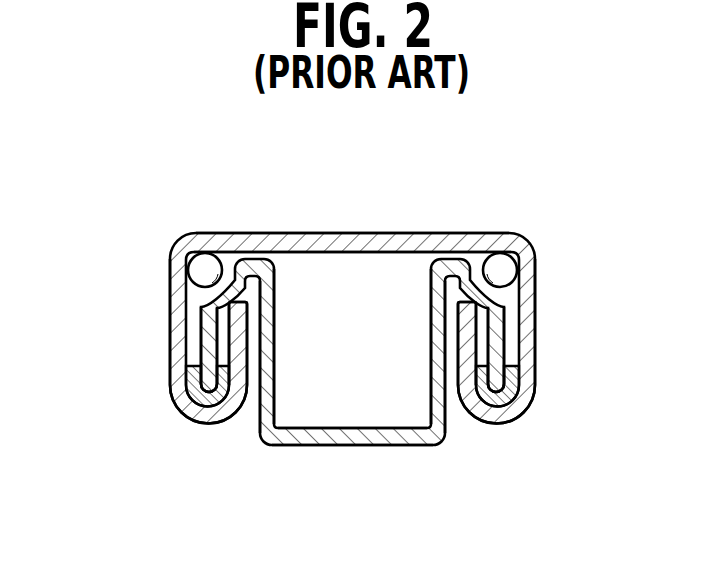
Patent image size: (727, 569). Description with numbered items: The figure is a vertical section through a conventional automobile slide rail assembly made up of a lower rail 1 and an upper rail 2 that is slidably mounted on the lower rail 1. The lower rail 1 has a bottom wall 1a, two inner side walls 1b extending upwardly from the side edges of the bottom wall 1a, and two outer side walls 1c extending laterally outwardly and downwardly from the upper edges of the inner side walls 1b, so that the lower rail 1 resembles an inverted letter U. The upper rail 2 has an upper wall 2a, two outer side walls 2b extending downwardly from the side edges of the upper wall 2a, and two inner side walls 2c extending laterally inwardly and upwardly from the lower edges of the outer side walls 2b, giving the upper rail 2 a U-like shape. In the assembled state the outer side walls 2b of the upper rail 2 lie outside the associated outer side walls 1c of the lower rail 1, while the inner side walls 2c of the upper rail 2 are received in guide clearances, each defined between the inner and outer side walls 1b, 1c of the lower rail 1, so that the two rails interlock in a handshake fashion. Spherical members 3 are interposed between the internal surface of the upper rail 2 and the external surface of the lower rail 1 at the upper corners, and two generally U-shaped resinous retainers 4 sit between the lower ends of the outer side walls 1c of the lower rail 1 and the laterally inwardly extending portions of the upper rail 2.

The lower rail 1 is at (433, 446).
The bottom wall 1a is at (296, 436).
The inner side walls 1b is at (274, 320).
The outer side walls 1c is at (208, 327).
The upper rail 2 is at (440, 233).
The upper wall 2a is at (324, 244).
The outer side walls 2b is at (178, 305).
The inner side walls 2c is at (248, 382).
The spherical members 3 is at (192, 253).
The resinous retainers 4 is at (188, 409).